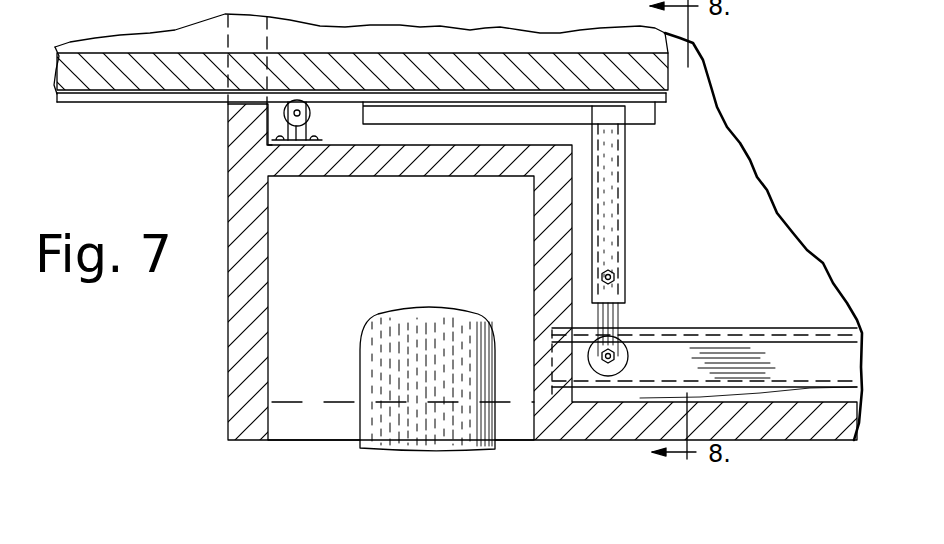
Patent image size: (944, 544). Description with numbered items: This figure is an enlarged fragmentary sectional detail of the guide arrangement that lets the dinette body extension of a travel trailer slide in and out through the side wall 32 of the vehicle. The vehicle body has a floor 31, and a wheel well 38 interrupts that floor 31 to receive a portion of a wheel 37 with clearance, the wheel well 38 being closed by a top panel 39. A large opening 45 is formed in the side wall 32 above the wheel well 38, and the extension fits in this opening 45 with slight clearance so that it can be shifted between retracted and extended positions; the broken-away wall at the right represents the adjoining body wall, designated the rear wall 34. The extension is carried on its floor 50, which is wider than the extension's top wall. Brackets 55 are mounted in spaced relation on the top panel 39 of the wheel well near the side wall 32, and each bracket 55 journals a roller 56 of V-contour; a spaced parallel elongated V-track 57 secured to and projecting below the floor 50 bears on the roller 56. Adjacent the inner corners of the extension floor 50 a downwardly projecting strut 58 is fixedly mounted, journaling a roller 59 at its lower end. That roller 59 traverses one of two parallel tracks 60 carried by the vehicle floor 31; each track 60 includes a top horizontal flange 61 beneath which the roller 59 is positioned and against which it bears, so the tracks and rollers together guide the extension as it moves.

The floor of the body extension 50 is at (108, 78).
The V-track 57 is at (171, 102).
The opening 45 is at (244, 110).
The roller 56 is at (310, 114).
The bracket 55 is at (295, 128).
The top panel of the wheel well 39 is at (440, 170).
The wheel well 38 is at (548, 216).
The wheel 37 is at (436, 306).
The strut 58 is at (620, 144).
The rear wall 34 is at (740, 167).
The side wall 32 is at (242, 331).
The roller 59 is at (630, 350).
The top horizontal flange 61 is at (726, 330).
The track 60 is at (777, 357).
The floor 31 is at (842, 426).